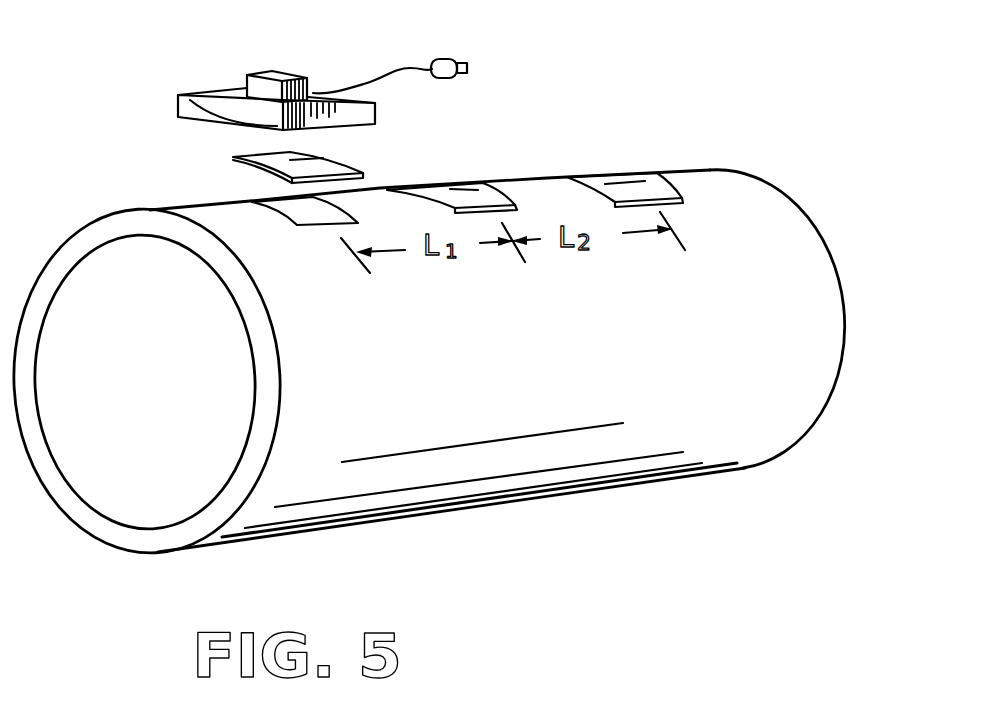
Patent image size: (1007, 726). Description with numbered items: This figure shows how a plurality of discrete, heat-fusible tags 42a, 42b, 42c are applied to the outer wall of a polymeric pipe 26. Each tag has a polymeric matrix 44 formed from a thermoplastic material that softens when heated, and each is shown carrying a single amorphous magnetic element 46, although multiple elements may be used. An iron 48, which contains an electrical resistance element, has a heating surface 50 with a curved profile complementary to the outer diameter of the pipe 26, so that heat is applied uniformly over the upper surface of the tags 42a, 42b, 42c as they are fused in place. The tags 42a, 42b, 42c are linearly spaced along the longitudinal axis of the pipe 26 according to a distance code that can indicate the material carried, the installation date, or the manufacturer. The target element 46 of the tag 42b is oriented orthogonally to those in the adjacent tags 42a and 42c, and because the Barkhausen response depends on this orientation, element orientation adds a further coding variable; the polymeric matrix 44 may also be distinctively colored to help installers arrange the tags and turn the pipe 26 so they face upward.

The polymeric pipe 26 is at (540, 343).
The heat-fusible tag 42a is at (271, 173).
The heat-fusible tag 42b is at (510, 178).
The heat-fusible tag 42c is at (671, 170).
The polymeric matrix 44 is at (263, 155).
The amorphous magnetic element 46 is at (287, 176).
The iron 48 is at (285, 68).
The heating surface 50 is at (230, 70).